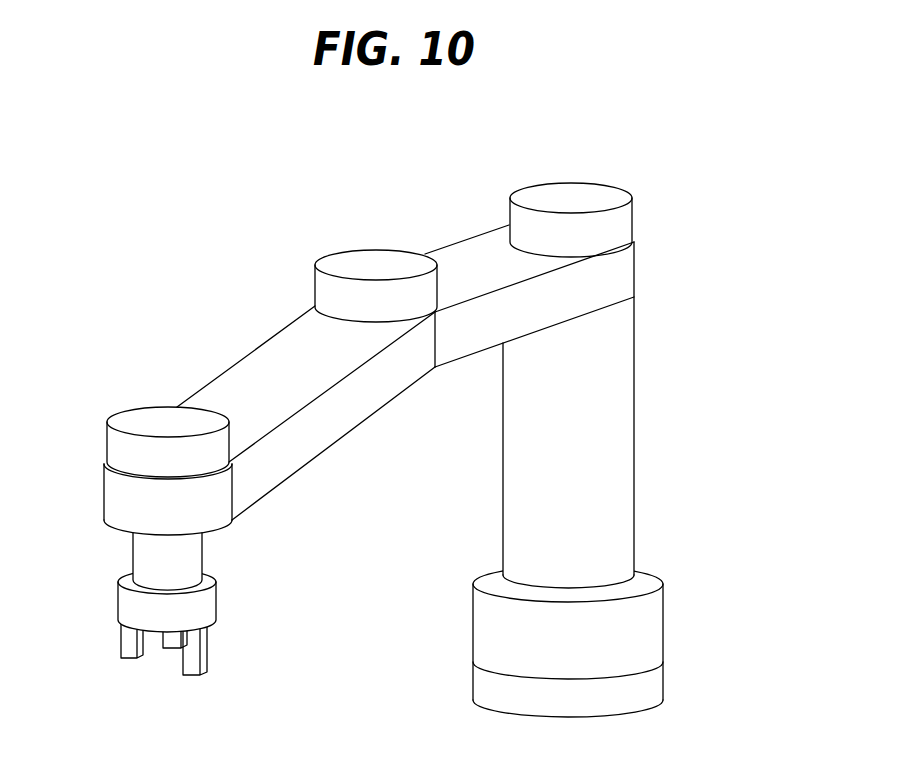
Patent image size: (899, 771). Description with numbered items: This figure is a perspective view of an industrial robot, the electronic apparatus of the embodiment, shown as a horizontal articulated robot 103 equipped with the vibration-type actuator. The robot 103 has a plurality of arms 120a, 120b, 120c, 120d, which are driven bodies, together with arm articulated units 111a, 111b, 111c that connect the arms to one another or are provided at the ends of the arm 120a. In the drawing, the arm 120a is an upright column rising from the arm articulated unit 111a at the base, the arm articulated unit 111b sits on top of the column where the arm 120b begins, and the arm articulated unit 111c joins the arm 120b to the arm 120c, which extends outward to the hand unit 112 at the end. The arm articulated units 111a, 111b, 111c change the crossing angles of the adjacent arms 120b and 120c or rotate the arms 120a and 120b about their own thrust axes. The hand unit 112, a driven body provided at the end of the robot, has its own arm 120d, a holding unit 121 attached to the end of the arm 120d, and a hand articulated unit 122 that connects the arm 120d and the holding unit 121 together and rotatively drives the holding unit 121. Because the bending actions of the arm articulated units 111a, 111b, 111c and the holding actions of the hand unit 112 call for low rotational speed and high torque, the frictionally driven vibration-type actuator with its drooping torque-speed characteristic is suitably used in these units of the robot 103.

The robot 103 is at (197, 226).
The arm articulated unit 111a is at (657, 688).
The arm articulated unit 111b is at (622, 220).
The arm articulated unit 111c is at (317, 285).
The arm 120a is at (628, 423).
The arm 120b is at (465, 253).
The arm 120c is at (232, 388).
The arm 120d is at (142, 550).
The hand unit 112 is at (255, 611).
The holding unit 121 is at (127, 643).
The hand articulated unit 122 is at (120, 605).